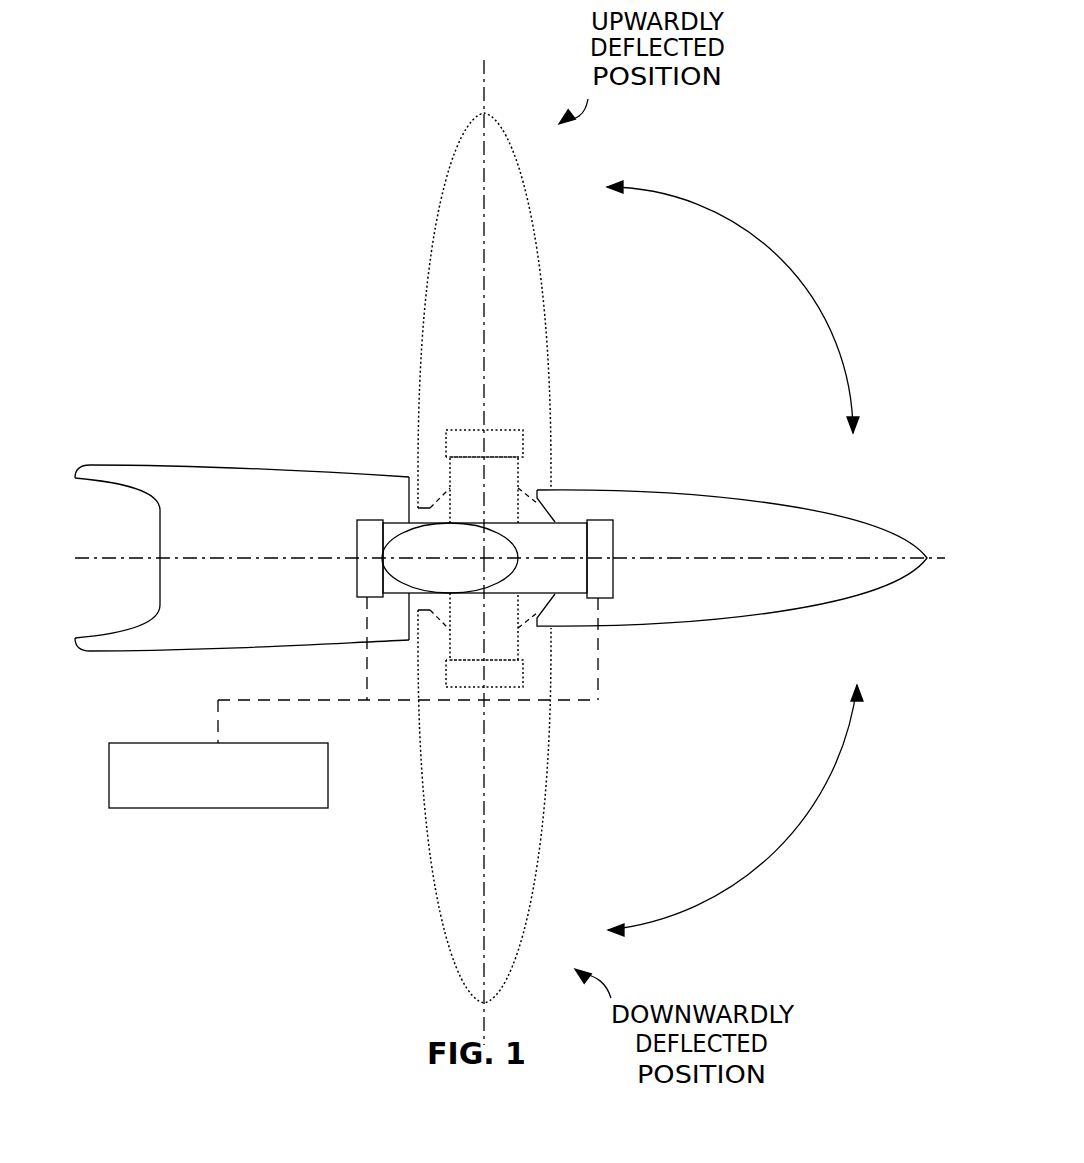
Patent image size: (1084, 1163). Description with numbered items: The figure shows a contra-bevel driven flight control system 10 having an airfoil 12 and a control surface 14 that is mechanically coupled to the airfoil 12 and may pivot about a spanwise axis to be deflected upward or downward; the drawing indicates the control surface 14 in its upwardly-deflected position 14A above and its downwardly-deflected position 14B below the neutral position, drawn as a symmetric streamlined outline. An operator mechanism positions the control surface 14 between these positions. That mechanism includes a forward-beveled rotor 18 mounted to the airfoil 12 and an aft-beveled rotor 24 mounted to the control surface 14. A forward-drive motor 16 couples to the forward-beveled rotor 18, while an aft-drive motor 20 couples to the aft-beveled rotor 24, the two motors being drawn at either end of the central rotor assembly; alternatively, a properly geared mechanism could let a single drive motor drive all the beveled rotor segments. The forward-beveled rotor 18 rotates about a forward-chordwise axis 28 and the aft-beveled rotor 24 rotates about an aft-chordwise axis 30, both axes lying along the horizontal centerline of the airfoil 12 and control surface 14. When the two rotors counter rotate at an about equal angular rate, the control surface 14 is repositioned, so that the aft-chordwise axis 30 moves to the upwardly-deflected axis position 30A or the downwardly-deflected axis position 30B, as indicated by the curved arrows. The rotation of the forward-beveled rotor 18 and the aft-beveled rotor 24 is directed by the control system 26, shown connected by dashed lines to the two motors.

The control surface assembly 10 is at (215, 188).
The airfoil 12 is at (242, 558).
The control surface 14 is at (672, 559).
The control surface in upwardly deflected position 14A is at (427, 312).
The control surface in downwardly deflected position 14B is at (423, 770).
The forward-drive motor 16 is at (357, 527).
The forward-beveled rotor 18 is at (450, 558).
The aft-drive motor 20 is at (605, 520).
The aft-beveled rotor 24 is at (485, 558).
The control system 26 is at (353, 702).
The forward-chordwise axis 28 is at (122, 557).
The aft-chordwise axis 30 is at (872, 560).
The trailing edge in upwardly deflected position 30A is at (486, 362).
The trailing edge in downwardly deflected position 30B is at (485, 777).